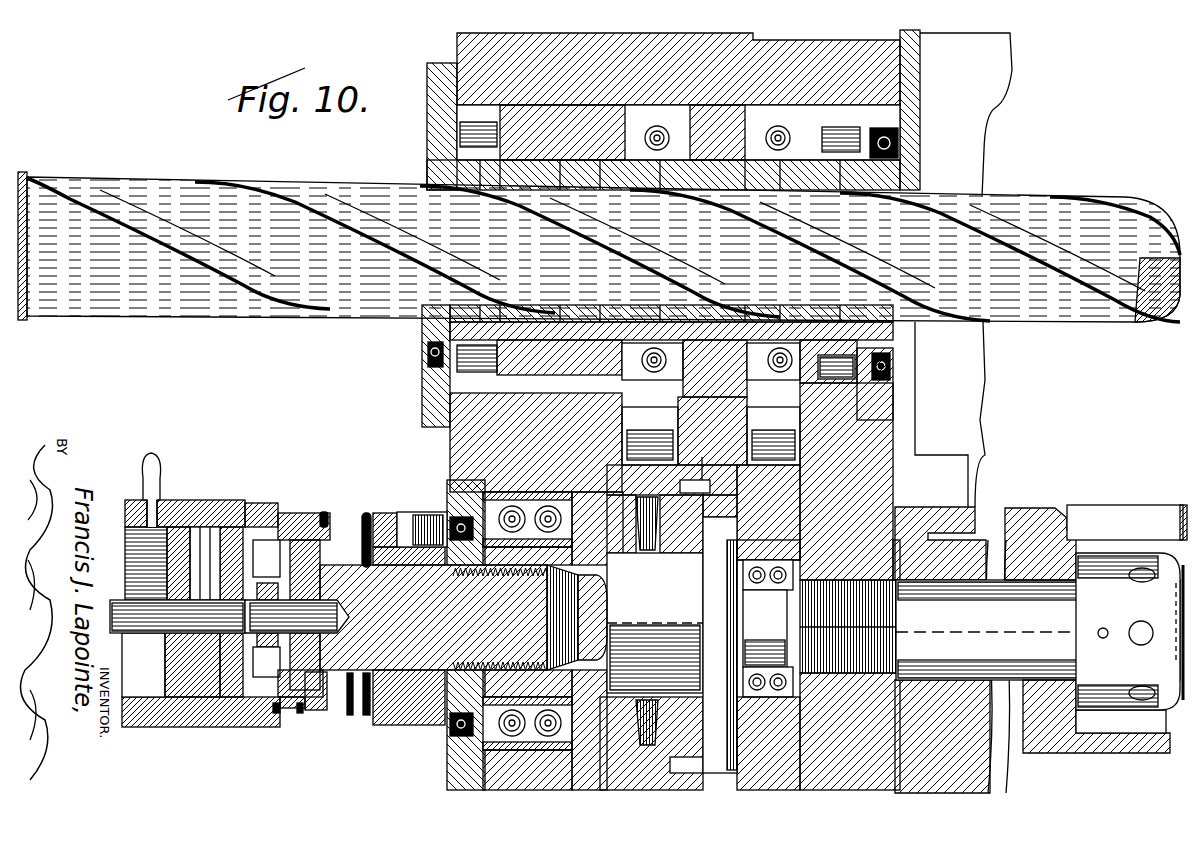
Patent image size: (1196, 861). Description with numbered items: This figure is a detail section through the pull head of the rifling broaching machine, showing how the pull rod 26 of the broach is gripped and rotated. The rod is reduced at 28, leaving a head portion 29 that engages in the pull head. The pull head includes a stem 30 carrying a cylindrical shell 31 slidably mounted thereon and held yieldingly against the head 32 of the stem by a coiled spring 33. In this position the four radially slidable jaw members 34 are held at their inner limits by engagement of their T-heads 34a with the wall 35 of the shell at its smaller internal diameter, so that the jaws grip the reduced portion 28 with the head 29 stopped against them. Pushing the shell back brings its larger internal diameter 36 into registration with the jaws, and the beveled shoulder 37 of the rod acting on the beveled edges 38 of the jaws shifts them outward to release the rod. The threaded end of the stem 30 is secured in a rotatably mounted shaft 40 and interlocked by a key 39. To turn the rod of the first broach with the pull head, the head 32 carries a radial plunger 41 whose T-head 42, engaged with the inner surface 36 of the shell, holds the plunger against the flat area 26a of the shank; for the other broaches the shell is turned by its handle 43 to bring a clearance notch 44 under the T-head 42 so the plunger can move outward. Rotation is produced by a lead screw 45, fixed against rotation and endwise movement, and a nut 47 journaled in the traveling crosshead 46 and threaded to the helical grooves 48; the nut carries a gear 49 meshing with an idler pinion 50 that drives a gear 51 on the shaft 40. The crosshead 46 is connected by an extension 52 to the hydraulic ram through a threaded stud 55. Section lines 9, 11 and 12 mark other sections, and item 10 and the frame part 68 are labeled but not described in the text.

The section line 9- 9 is at (690, 29).
The housing 10 is at (455, 442).
The section line 11- 11 is at (125, 495).
The section line 12- 12 is at (275, 472).
The pull rod 26 is at (140, 613).
The flat area 26a is at (152, 630).
The reduced portion 28 is at (232, 630).
The head portion 29 is at (353, 567).
The stem 30 is at (355, 557).
The cylindrical shell 31 is at (263, 505).
The head 32 is at (305, 705).
The coiled spring 33 is at (349, 716).
The jaw members 34 is at (302, 527).
The T-heads 34a is at (278, 713).
The wall 35 is at (280, 527).
The larger internal diameter 36 is at (246, 527).
The beveled shoulder 37 is at (327, 691).
The beveled edges 38 is at (327, 540).
The key 39 is at (397, 547).
The shaft 40 is at (422, 680).
The plunger 41 is at (140, 560).
The T-head 42 is at (202, 503).
The handle 43 is at (160, 457).
The clearance notch 44 is at (165, 500).
The lead screw 45 is at (155, 197).
The crosshead 46 is at (508, 50).
The nut 47 is at (425, 162).
The helical grooves 48 is at (287, 200).
The gear 49 is at (700, 147).
The idler pinion 50 is at (702, 457).
The gear 51 is at (707, 548).
The extension 52 is at (963, 747).
The threaded stud 55 is at (1030, 600).
The frame 68 is at (968, 108).